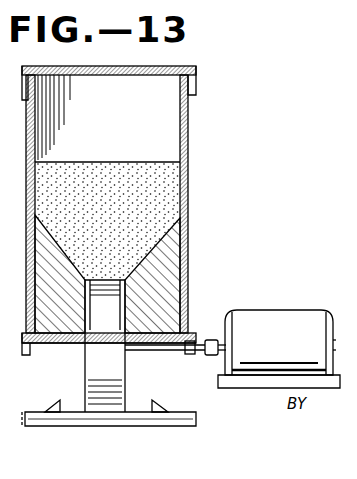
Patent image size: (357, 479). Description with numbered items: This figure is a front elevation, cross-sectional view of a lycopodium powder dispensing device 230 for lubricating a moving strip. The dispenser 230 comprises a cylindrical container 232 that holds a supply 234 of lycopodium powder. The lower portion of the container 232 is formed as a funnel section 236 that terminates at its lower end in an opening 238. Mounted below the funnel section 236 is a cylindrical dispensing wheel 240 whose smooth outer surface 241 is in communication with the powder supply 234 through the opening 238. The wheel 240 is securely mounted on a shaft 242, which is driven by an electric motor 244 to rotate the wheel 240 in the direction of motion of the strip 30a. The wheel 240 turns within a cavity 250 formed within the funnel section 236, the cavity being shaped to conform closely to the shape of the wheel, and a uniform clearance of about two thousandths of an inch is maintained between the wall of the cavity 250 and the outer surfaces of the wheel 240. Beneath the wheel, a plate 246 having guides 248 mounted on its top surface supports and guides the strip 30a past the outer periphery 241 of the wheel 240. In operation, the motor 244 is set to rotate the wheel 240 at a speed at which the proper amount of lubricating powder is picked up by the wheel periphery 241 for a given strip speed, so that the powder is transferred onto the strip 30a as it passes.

The lycopodium powder dispensing device 230 is at (139, 189).
The cylindrical container 232 is at (190, 124).
The supply of lycopodium powder 234 is at (165, 178).
The funnel section 236 is at (153, 229).
The opening 238 is at (136, 326).
The cylindrical dispensing wheel 240 is at (106, 346).
The smooth outer surface 241 is at (85, 372).
The shaft 242 is at (205, 338).
The electric motor 244 is at (268, 310).
The plate 246 is at (60, 428).
The guides 248 is at (55, 406).
The cavity 250 is at (121, 312).
The strip 30a is at (130, 400).